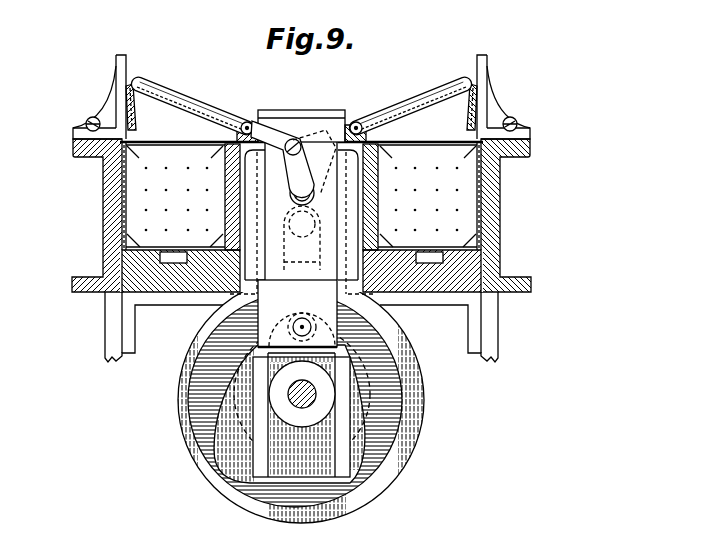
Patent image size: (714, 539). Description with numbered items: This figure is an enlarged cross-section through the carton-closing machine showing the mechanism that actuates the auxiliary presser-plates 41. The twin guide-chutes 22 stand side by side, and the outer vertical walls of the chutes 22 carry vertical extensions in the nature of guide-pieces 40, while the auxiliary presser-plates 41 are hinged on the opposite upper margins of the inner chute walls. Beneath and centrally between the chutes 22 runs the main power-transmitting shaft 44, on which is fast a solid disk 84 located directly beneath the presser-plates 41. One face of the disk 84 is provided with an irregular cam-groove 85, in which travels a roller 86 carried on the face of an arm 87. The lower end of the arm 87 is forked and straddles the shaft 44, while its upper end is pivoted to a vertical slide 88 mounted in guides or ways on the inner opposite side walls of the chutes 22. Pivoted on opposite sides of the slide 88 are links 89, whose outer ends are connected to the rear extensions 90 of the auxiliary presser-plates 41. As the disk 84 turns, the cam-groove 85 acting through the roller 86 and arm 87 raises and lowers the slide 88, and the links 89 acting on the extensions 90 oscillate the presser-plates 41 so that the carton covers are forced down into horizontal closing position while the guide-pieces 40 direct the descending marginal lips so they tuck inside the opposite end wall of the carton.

The guide-chutes 22 is at (112, 197).
The guide-pieces 40 is at (118, 97).
The auxiliary presser-plates 41 is at (211, 99).
The main power-transmitting shaft 44 is at (288, 402).
The solid disk 84 is at (426, 402).
The cam-groove 85 is at (392, 428).
The roller 86 is at (312, 330).
The arm 87 is at (253, 363).
The vertical slide 88 is at (300, 126).
The links 89 is at (305, 160).
The rear extensions 90 is at (263, 110).